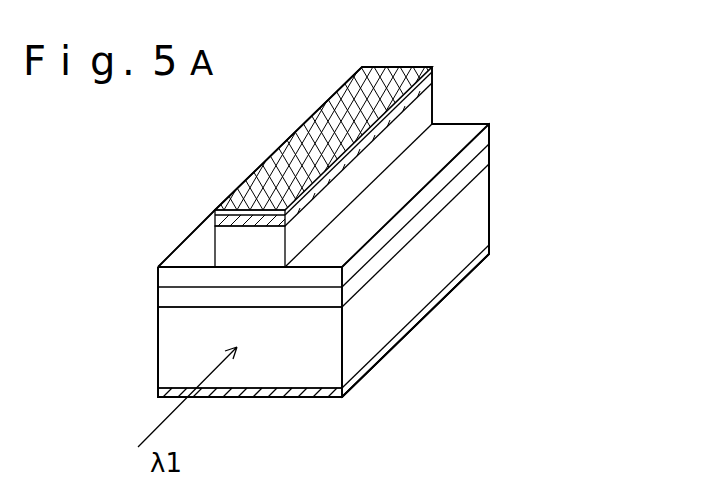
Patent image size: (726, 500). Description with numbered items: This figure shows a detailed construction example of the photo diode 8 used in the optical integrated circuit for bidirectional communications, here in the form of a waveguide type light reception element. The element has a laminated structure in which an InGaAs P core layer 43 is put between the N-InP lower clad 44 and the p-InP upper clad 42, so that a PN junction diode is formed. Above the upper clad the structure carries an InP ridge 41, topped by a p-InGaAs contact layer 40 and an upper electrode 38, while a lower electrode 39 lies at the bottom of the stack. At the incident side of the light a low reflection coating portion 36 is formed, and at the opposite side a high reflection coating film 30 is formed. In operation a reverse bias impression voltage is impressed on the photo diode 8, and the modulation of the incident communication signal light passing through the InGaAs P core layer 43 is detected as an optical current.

The photo diode 8 is at (603, 162).
The high reflection coating film 30 is at (490, 233).
The low reflection coating portion 36 is at (323, 352).
The upper electrode 38 is at (407, 65).
The lower electrode 39 is at (305, 398).
The p-InGaAs contact layer 40 is at (436, 76).
The InP ridge 41 is at (426, 113).
The p-InP upper clad 42 is at (204, 247).
The 1-InGaAs P core layer 43 is at (490, 178).
The N-InP lower clad 44 is at (392, 317).